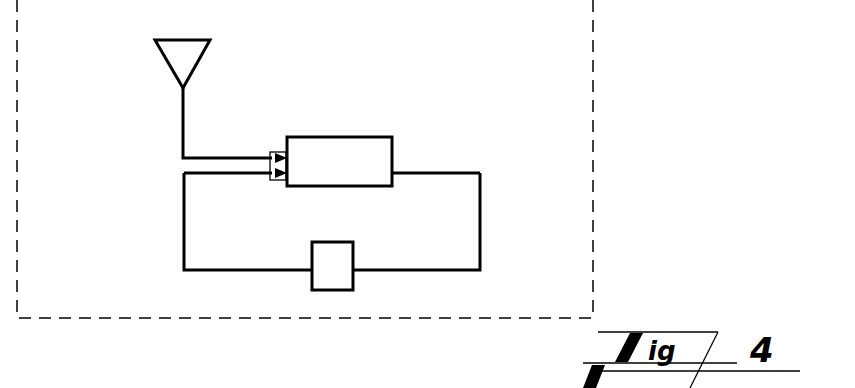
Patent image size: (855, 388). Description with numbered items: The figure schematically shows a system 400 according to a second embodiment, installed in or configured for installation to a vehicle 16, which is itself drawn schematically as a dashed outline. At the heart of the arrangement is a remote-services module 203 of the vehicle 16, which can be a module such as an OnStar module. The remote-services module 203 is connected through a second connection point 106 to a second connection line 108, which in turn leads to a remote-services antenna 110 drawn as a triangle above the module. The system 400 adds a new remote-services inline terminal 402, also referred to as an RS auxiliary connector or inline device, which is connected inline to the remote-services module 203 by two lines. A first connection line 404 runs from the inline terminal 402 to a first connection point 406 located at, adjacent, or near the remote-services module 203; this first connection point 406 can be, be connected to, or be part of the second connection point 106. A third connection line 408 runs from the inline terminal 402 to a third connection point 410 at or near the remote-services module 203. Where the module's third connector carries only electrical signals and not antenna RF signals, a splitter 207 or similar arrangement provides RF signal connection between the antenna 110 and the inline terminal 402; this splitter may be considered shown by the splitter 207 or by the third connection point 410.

The vehicle 16 is at (340, 33).
The remote-services antenna 110 is at (140, 104).
The second connection line 108 is at (218, 158).
The second connection point 106 is at (276, 152).
The splitter 207 is at (280, 180).
The remote-services module 203 is at (338, 137).
The third connection point 410 is at (395, 173).
The system 400 is at (475, 30).
The third connection line 408 is at (480, 222).
The remote-services inline terminal 402 is at (332, 242).
The first connection point 406 is at (276, 180).
The first connection line 404 is at (184, 217).